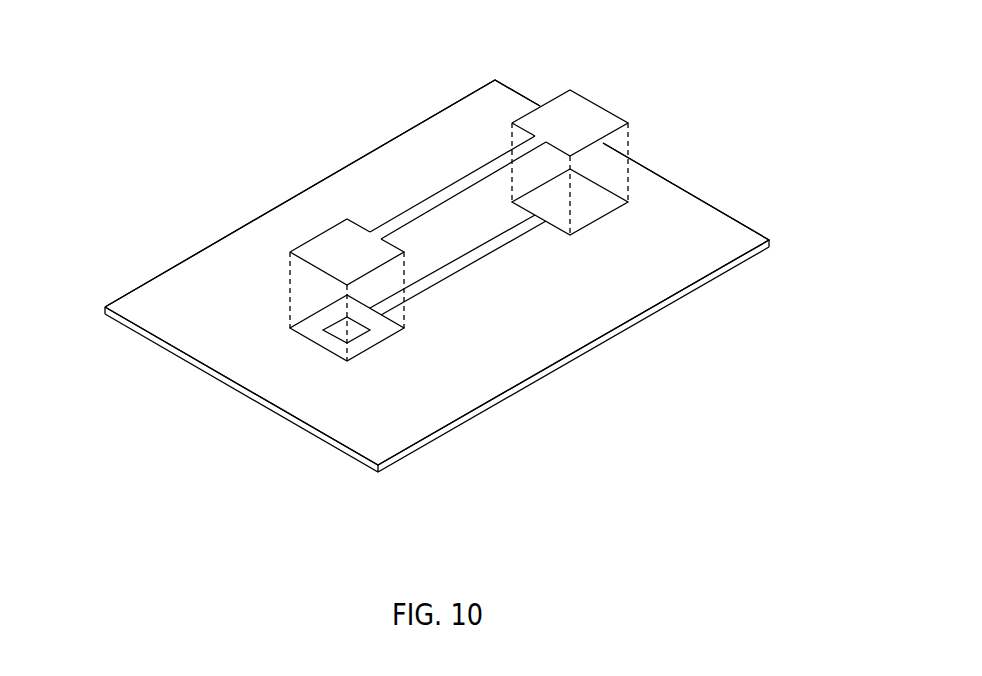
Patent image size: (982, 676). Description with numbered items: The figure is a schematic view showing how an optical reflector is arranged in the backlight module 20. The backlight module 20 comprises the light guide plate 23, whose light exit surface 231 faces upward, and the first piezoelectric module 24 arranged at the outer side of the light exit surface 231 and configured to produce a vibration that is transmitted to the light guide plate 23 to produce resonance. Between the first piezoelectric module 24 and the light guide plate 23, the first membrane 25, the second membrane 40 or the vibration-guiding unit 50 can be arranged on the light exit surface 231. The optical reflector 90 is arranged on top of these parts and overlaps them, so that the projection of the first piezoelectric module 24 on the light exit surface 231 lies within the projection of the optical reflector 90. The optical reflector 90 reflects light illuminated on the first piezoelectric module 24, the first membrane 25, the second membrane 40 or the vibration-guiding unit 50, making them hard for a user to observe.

The backlight module 20 is at (258, 72).
The light guide plate 23 is at (698, 197).
The light exit surface 231 is at (715, 233).
The first piezoelectric module 24 is at (332, 335).
The first membrane 25 is at (387, 338).
The second membrane 40 is at (610, 212).
The vibration-guiding unit 50 is at (480, 257).
The optical reflector 90 is at (605, 110).